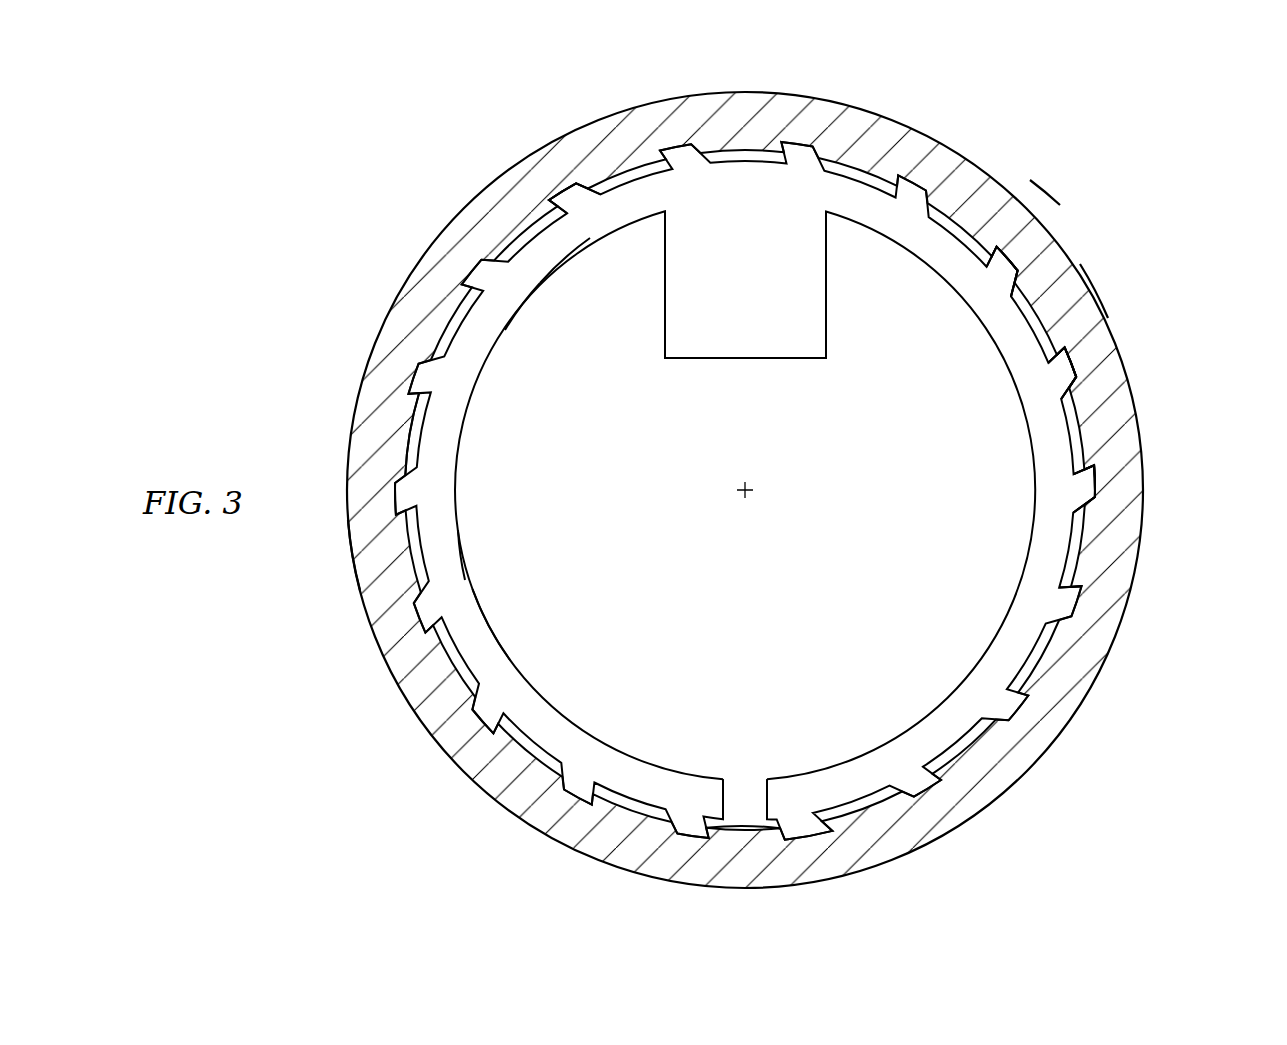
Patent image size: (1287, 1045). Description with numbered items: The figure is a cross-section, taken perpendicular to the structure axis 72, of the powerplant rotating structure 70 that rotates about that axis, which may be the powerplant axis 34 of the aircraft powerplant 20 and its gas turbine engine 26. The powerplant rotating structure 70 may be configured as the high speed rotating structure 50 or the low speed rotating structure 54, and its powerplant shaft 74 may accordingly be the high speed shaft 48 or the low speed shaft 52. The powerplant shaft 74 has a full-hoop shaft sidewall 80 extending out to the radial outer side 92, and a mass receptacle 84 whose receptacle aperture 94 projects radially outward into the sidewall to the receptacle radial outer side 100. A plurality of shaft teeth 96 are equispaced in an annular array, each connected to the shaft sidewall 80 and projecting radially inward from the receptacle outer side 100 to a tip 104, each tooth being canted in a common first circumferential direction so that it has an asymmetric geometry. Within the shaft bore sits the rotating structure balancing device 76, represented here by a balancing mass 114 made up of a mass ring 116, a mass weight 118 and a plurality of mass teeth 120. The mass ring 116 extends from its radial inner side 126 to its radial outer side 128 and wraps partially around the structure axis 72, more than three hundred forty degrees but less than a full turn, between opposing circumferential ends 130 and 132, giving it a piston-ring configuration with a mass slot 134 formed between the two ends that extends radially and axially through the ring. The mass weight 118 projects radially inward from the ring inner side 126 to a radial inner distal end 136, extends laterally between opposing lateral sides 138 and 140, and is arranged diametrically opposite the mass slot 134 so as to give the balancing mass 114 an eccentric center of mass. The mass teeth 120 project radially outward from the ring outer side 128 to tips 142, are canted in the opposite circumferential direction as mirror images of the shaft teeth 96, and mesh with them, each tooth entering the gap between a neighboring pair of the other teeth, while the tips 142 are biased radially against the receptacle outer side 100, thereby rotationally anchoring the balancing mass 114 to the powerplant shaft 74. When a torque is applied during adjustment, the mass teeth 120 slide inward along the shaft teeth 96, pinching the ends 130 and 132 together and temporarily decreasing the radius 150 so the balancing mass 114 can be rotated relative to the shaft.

The aircraft powerplant 20 is at (745, 486).
The gas turbine engine 26 is at (313, 112).
The powerplant axis 34 is at (752, 529).
The structure axis 72 is at (748, 498).
The high speed shaft 48 is at (805, 490).
The low speed shaft 52 is at (805, 490).
The powerplant shaft 74 is at (1078, 260).
The high speed rotating structure 50 is at (796, 443).
The low speed rotating structure 54 is at (796, 443).
The powerplant rotating structure 70 is at (1095, 125).
The rotating structure balancing device 76 is at (533, 327).
The shaft sidewall 80 is at (1030, 227).
The mass receptacle 84 is at (400, 425).
The radial outer side 92 is at (1097, 300).
The receptacle aperture 94 is at (393, 548).
The shaft teeth 96 is at (1025, 287).
The radial outer side of the mass receptacle 100 is at (1086, 381).
The tip of the shaft tooth 104 is at (1052, 352).
The balancing mass 114 is at (476, 553).
The mass ring 116 is at (490, 650).
The mass weight 118 is at (726, 299).
The mass teeth 120 is at (993, 272).
The radial inner side of the mass ring 126 is at (560, 270).
The radial outer side of the mass ring 128 is at (540, 229).
The first circumferential end 130 is at (727, 793).
The second circumferential end 132 is at (762, 795).
The mass slot 134 is at (742, 812).
The radial inner distal end of the mass weight 136 is at (750, 360).
The lateral side of the mass weight 138 is at (665, 340).
The lateral side of the mass weight 140 is at (828, 328).
The tip of the mass tooth 142 is at (999, 249).
The radius of the balancing mass 150 is at (468, 426).